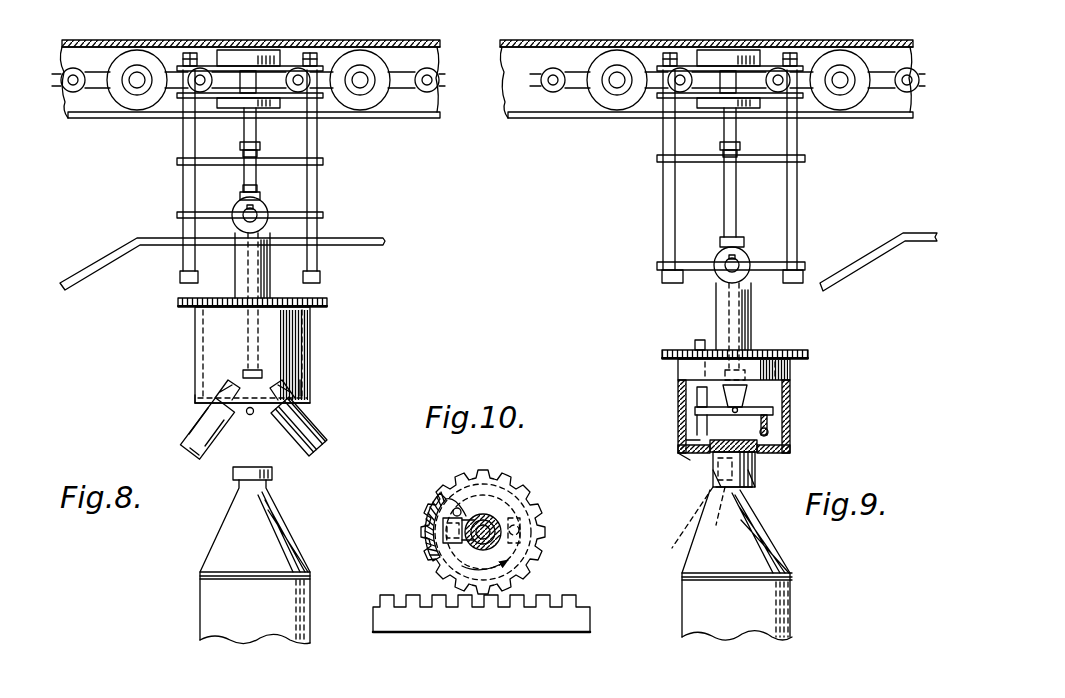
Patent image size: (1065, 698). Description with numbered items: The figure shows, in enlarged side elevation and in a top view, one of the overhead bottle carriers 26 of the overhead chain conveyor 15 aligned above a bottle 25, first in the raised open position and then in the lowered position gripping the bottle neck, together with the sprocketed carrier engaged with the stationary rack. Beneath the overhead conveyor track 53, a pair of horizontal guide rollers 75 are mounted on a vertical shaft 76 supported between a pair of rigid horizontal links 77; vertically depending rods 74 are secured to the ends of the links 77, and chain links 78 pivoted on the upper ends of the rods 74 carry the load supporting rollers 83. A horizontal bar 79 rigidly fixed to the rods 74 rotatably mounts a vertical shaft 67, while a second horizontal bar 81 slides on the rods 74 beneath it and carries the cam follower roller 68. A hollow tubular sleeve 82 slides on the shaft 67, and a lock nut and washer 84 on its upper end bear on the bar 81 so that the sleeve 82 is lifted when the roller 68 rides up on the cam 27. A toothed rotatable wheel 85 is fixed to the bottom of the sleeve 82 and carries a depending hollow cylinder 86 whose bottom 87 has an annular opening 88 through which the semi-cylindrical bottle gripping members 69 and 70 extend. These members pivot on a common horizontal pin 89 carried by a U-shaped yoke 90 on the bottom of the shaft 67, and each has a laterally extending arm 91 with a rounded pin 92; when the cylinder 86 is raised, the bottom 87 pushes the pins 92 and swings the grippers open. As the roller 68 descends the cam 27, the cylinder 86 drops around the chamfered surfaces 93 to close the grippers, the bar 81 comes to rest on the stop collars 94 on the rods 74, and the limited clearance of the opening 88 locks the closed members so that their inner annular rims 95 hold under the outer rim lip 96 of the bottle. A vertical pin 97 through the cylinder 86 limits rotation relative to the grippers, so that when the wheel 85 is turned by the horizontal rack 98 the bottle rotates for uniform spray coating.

In FIG. 8, the overhead chain conveyor 15 is at (400, 120).
In FIG. 9, the overhead chain conveyor 15 is at (706, 101).
In FIG. 8, the bottle 25 is at (195, 574).
In FIG. 9, the bottle 25 is at (800, 598).
In FIG. 8, the overhead bottle carrier 26 is at (172, 183).
In FIG. 9, the overhead bottle carrier 26 is at (660, 208).
In FIG. 8, the cam 27 is at (374, 236).
In FIG. 9, the cam 27 is at (915, 233).
In FIG. 8, the overhead conveyor track 53 is at (375, 42).
In FIG. 9, the overhead conveyor track 53 is at (706, 27).
In FIG. 8, the vertical shaft 67 is at (258, 176).
In FIG. 9, the vertical shaft 67 is at (740, 195).
In FIG. 10, the vertical shaft 67 is at (492, 526).
In FIG. 8, the roller 68 is at (264, 206).
In FIG. 9, the roller 68 is at (746, 258).
In FIG. 8, the bottle gripping member 69 is at (185, 432).
In FIG. 9, the bottle gripping member 69 is at (712, 478).
In FIG. 8, the bottle gripping member 70 is at (322, 442).
In FIG. 9, the bottle gripping member 70 is at (758, 478).
In FIG. 8, the vertically depending rod 74 is at (182, 130).
In FIG. 9, the vertically depending rod 74 is at (726, 170).
In FIG. 8, the horizontal guide roller 75 is at (270, 50).
In FIG. 9, the horizontal guide roller 75 is at (730, 52).
In FIG. 8, the vertical shaft 76 is at (255, 95).
In FIG. 9, the vertical shaft 76 is at (730, 60).
In FIG. 8, the rigid horizontal link 77 is at (200, 50).
In FIG. 9, the rigid horizontal link 77 is at (717, 77).
In FIG. 8, the chain link 78 is at (85, 92).
In FIG. 9, the chain link 78 is at (727, 78).
In FIG. 8, the horizontal bar 79 is at (250, 161).
In FIG. 9, the horizontal bar 79 is at (657, 160).
In FIG. 8, the second horizontal bar 81 is at (177, 215).
In FIG. 9, the second horizontal bar 81 is at (657, 266).
In FIG. 8, the hollow tubular sleeve 82 is at (265, 268).
In FIG. 9, the hollow tubular sleeve 82 is at (752, 315).
In FIG. 10, the hollow tubular sleeve 82 is at (487, 516).
In FIG. 8, the load supporting roller 83 is at (118, 62).
In FIG. 9, the load supporting roller 83 is at (728, 58).
In FIG. 8, the lock nut and washer 84 is at (236, 200).
In FIG. 9, the lock nut and washer 84 is at (720, 244).
In FIG. 8, the rotatable wheel 85 is at (178, 302).
In FIG. 9, the rotatable wheel 85 is at (808, 355).
In FIG. 10, the rotatable wheel 85 is at (542, 572).
In FIG. 8, the hollow cylinder 86 is at (195, 348).
In FIG. 9, the hollow cylinder 86 is at (680, 410).
In FIG. 10, the hollow cylinder 86 is at (446, 500).
In FIG. 8, the cylinder bottom 87 is at (200, 405).
In FIG. 9, the cylinder bottom 87 is at (697, 455).
In FIG. 9, the annular opening 88 is at (760, 452).
In FIG. 8, the horizontal pin 89 is at (250, 415).
In FIG. 8, the U-shaped yoke 90 is at (290, 348).
In FIG. 9, the U-shaped yoke 90 is at (748, 386).
In FIG. 8, the laterally extending arm 91 is at (272, 375).
In FIG. 9, the laterally extending arm 91 is at (700, 394).
In FIG. 10, the laterally extending arm 91 is at (436, 552).
In FIG. 8, the rounded pin 92 is at (305, 388).
In FIG. 9, the rounded pin 92 is at (768, 428).
In FIG. 10, the rounded pin 92 is at (440, 528).
In FIG. 8, the chamfered surface 93 is at (285, 404).
In FIG. 9, the chamfered surface 93 is at (688, 442).
In FIG. 8, the stop collar 94 is at (180, 278).
In FIG. 9, the stop collar 94 is at (672, 284).
In FIG. 8, the inner annular rim 95 is at (186, 452).
In FIG. 9, the inner annular rim 95 is at (670, 545).
In FIG. 8, the outer rim lip 96 is at (272, 474).
In FIG. 9, the outer rim lip 96 is at (731, 512).
In FIG. 9, the vertical pin 97 is at (695, 392).
In FIG. 10, the vertical pin 97 is at (450, 511).
In FIG. 10, the horizontal rack 98 is at (498, 632).